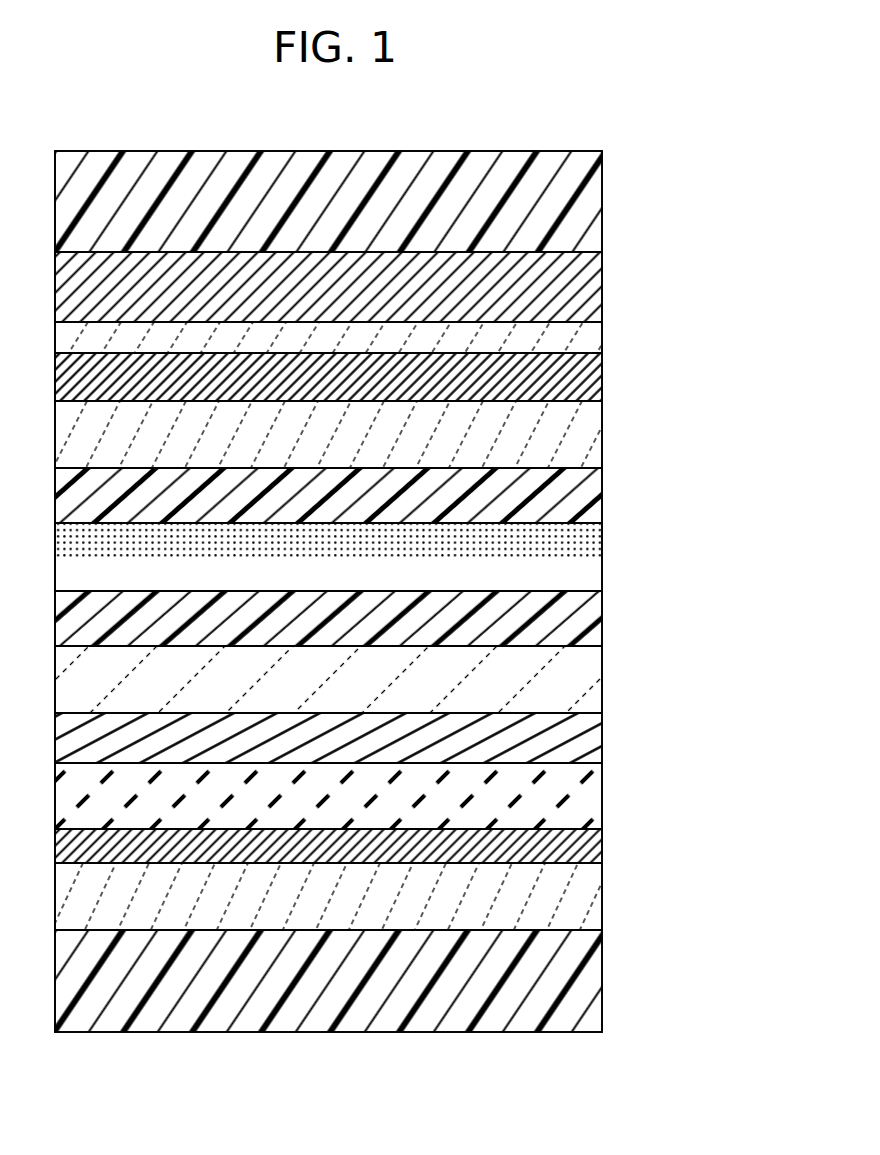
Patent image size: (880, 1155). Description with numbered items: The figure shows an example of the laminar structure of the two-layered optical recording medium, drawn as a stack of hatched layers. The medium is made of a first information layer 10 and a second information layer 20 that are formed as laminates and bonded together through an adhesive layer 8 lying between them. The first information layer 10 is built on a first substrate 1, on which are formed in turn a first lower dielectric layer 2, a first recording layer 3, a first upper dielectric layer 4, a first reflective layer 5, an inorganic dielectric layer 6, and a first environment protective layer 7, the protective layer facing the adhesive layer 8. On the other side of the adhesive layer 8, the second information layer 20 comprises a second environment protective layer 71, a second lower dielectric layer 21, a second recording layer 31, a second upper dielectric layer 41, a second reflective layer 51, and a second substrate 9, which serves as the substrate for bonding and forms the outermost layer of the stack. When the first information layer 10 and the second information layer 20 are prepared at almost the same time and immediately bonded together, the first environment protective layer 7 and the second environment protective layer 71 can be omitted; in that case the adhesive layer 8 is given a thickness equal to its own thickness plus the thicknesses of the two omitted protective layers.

The first substrate 1 is at (602, 984).
The first lower dielectric layer 2 is at (602, 897).
The first recording layer 3 is at (602, 843).
The first upper dielectric layer 4 is at (602, 802).
The first reflective layer 5 is at (602, 741).
The inorganic dielectric layer 6 is at (602, 679).
The first environment protective layer 7 is at (602, 618).
The adhesive layer 8 is at (602, 557).
The second substrate 9 is at (602, 203).
The first information layer 10 is at (705, 592).
The second information layer 20 is at (703, 252).
The second lower dielectric layer 21 is at (602, 436).
The second recording layer 31 is at (602, 373).
The second upper dielectric layer 41 is at (602, 340).
The second reflective layer 51 is at (602, 273).
The second environment protective layer 71 is at (602, 498).